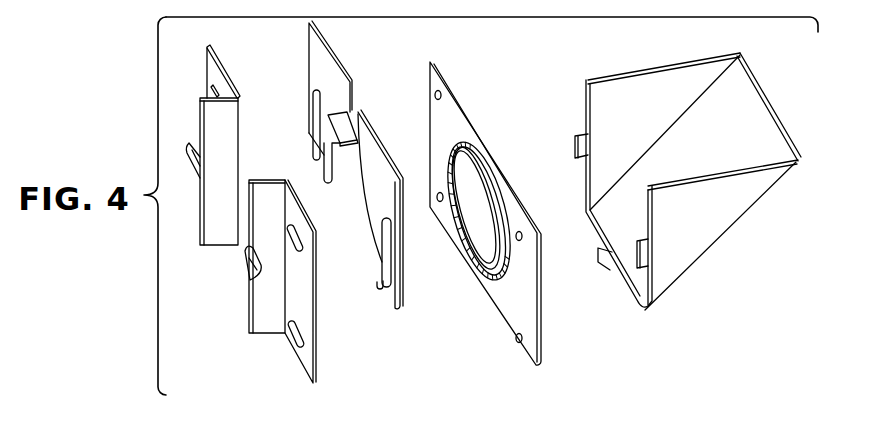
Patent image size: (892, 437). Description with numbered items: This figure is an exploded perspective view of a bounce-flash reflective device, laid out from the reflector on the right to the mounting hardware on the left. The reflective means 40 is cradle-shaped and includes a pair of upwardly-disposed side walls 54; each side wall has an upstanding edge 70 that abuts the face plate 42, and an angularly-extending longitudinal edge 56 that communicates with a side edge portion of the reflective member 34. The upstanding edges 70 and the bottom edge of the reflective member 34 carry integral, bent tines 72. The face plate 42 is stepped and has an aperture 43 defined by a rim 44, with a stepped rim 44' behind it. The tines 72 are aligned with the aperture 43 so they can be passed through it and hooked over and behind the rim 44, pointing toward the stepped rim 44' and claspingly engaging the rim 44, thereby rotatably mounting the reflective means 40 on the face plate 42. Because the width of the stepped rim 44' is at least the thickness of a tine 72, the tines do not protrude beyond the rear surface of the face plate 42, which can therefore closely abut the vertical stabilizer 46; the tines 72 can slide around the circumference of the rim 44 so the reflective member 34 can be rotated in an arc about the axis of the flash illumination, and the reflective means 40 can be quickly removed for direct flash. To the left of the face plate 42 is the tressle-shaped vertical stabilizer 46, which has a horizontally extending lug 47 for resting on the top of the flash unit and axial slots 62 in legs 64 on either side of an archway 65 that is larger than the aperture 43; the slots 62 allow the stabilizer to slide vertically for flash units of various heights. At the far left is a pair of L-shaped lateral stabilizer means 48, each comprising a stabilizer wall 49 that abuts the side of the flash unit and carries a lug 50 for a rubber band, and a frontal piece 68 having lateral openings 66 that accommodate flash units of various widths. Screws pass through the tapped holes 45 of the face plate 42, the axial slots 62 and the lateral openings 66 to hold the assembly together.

The reflective member 34 is at (714, 127).
The reflective means 40 is at (707, 260).
The face plate 42 is at (497, 309).
The aperture 43 is at (484, 190).
The rim 44 is at (469, 211).
The stepped rim 44' is at (469, 225).
The tapped holes 45 is at (439, 194).
The vertical stabilizer 46 is at (339, 53).
The lug 47 is at (346, 124).
The lateral stabilizer means 48 is at (267, 178).
The stabilizer wall 49 is at (206, 220).
The lug 50 is at (185, 150).
The side walls 54 is at (633, 109).
The longitudinal edge 56 is at (673, 130).
The axial slots 62 is at (315, 100).
The legs 64 is at (327, 173).
The archway 65 is at (361, 170).
The lateral openings 66 is at (211, 90).
The frontal pieces 68 is at (212, 62).
The upstanding edge 70 is at (586, 108).
The tines 72 is at (583, 145).